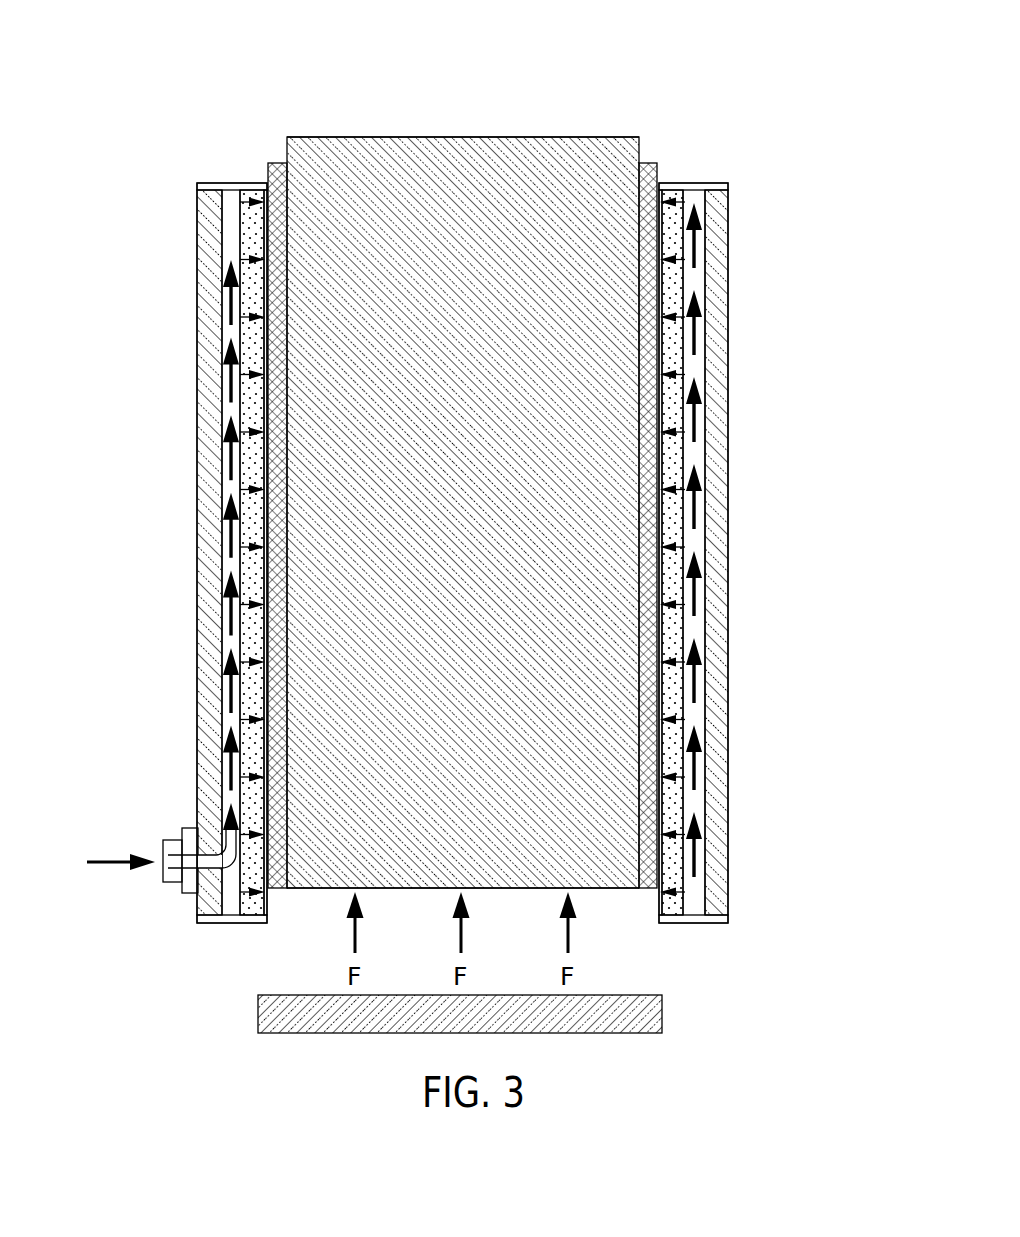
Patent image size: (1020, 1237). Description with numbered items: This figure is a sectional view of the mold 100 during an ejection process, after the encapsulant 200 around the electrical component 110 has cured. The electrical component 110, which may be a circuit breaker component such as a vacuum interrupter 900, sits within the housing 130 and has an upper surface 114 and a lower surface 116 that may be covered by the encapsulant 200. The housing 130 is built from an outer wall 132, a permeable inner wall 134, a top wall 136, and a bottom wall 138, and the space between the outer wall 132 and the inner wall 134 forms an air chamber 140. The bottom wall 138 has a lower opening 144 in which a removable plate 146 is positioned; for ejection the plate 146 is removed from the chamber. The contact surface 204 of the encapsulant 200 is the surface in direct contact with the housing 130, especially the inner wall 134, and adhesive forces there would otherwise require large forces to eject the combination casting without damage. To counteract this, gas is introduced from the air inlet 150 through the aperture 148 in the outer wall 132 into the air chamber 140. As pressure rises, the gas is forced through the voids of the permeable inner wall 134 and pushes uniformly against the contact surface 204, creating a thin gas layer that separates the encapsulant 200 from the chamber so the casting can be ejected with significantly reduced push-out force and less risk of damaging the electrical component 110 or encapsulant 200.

The vacuum interrupter 900 is at (593, 87).
The mold 100 is at (781, 213).
The electrical component 110 is at (512, 146).
The upper surface 114 is at (392, 137).
The lower surface 116 is at (618, 890).
The housing 130 is at (183, 277).
The outer wall 132 is at (210, 716).
The inner wall 134 is at (250, 546).
The top wall 136 is at (233, 188).
The bottom wall 138 is at (228, 923).
The air chamber 140 is at (232, 637).
The lower opening 144 is at (303, 936).
The plate 146 is at (665, 1020).
The aperture 148 is at (210, 850).
The air inlet 150 is at (177, 883).
The encapsulant 200 is at (278, 403).
The contact surface 204 is at (280, 162).